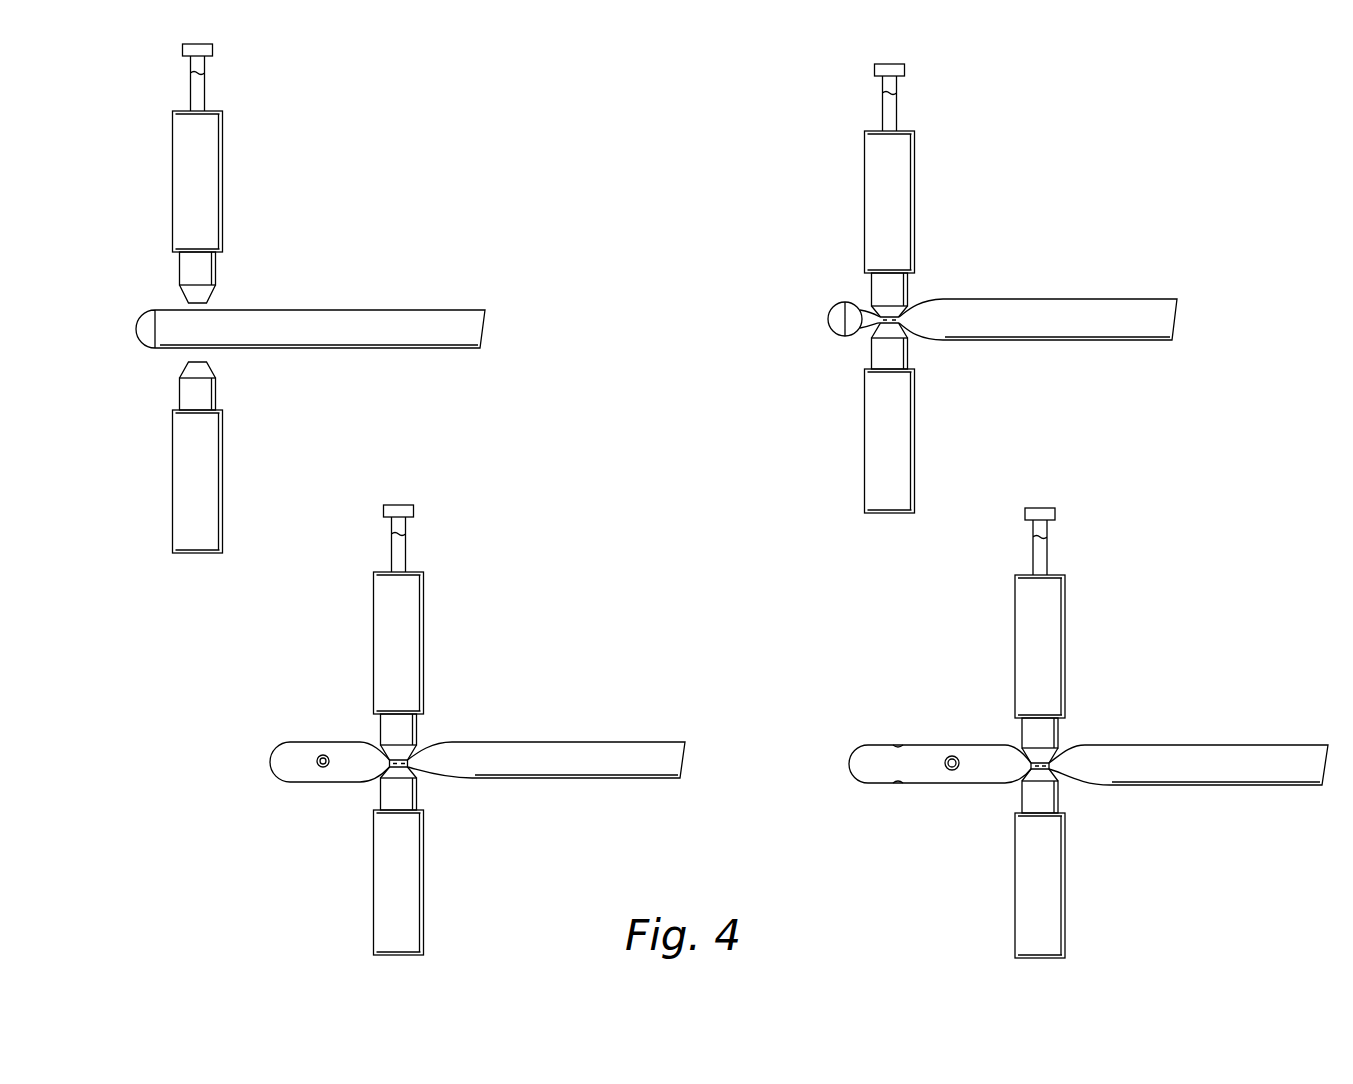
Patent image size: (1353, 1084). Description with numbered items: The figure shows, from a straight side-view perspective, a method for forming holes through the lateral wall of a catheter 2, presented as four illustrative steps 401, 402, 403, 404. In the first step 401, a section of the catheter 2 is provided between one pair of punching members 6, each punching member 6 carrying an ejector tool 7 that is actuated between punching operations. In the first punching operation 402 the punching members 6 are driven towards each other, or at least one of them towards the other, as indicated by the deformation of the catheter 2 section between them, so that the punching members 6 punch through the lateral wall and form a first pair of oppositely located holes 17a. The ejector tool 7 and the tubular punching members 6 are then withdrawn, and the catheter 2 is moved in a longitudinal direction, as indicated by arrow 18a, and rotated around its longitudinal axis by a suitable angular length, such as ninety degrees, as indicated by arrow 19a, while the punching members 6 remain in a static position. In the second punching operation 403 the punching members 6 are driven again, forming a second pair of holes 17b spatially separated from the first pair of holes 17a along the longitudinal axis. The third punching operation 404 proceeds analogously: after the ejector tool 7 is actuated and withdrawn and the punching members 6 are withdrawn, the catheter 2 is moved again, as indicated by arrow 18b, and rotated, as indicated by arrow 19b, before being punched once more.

The catheter 2 is at (737, 491).
The punching members 6 is at (214, 173).
The ejector tool 7 is at (202, 97).
The first setup step 401 is at (333, 245).
The first punching operation 402 is at (1045, 238).
The second punching operation 403 is at (555, 629).
The third punching operation 404 is at (1156, 885).
The first pair of holes 17a is at (323, 768).
The second pair of holes 17b is at (955, 771).
The arrow indicating longitudinal movement of the catheter 18a is at (505, 703).
The arrow indicating longitudinal movement of the catheter 18b is at (1143, 706).
The arrow indicating rotation of the catheter 19a is at (525, 800).
The arrow indicating rotation of the catheter 19b is at (1162, 804).